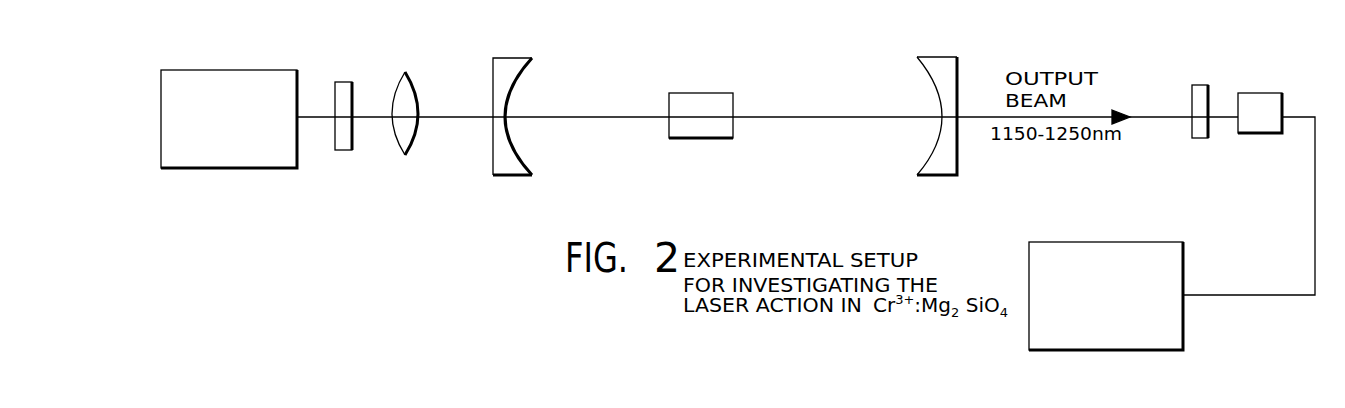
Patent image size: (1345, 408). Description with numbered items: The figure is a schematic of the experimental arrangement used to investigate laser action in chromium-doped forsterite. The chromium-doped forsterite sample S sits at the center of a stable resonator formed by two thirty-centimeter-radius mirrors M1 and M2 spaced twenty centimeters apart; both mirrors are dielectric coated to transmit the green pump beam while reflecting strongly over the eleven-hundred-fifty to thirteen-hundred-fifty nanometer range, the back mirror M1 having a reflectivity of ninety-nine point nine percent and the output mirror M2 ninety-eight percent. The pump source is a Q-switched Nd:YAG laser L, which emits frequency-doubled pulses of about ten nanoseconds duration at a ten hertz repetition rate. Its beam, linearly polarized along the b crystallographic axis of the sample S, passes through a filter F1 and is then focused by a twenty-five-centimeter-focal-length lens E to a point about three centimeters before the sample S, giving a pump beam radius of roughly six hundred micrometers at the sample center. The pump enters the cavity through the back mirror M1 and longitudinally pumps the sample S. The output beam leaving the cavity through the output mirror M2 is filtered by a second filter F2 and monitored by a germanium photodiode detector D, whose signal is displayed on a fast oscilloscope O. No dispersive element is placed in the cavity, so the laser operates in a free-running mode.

The Q-switched Nd:YAG laser L is at (252, 70).
The filter F1 is at (343, 82).
The lens E is at (418, 82).
The back mirror M1 is at (513, 58).
The chromium-doped forsterite sample S is at (702, 93).
The output mirror M2 is at (940, 57).
The filter F2 is at (1197, 85).
The germanium photodiode detector D is at (1262, 135).
The fast oscilloscope O is at (1103, 350).